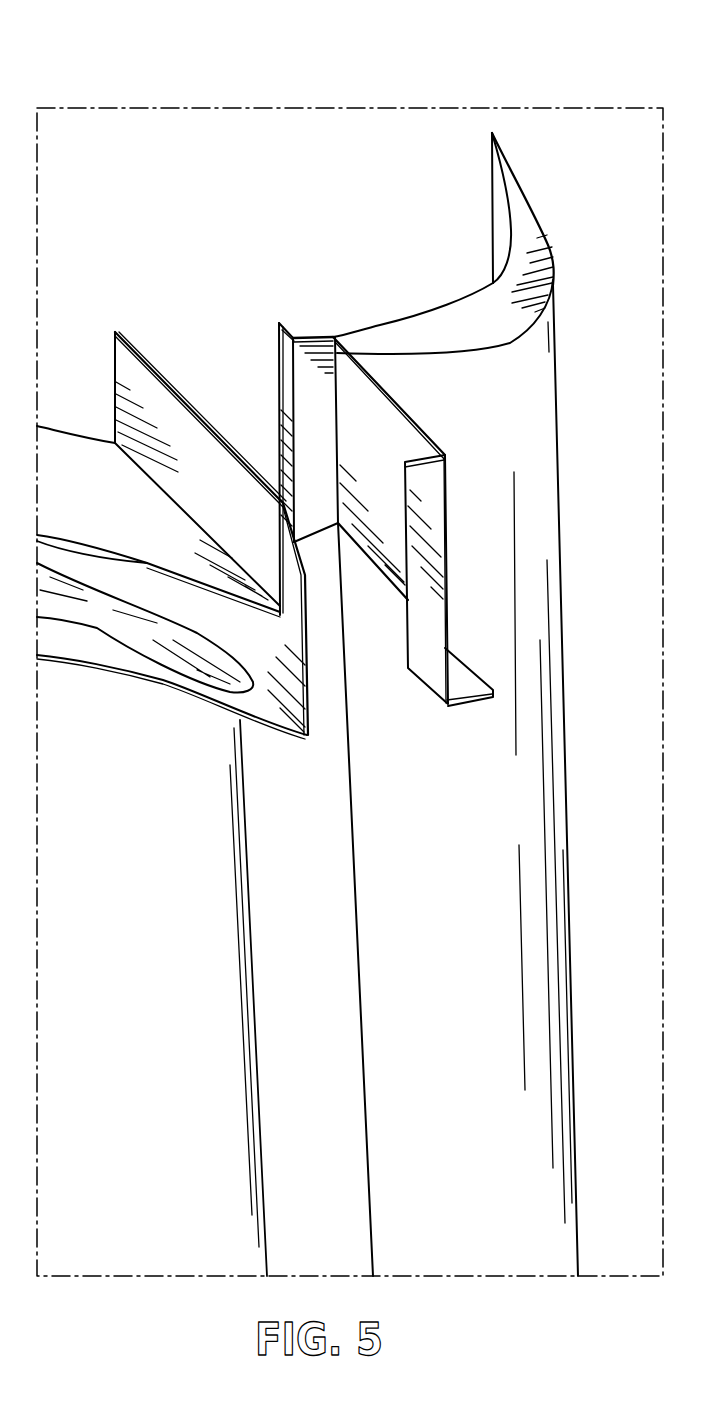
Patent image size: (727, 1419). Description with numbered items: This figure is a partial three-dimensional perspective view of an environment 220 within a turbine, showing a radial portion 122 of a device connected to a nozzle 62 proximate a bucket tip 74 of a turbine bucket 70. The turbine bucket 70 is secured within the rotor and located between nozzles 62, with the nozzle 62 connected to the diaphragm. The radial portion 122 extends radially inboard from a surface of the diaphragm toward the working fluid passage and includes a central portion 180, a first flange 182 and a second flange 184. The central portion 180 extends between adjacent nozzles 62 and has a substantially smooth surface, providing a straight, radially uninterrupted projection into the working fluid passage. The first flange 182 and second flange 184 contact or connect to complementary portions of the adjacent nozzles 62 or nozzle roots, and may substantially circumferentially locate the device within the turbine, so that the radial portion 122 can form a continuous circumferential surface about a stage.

The environment 220 is at (88, 98).
The turbine bucket 70 is at (117, 1053).
The bucket tip 74 is at (135, 517).
The first flange 182 is at (283, 372).
The radial portion 122 is at (395, 460).
The central portion 180 is at (407, 433).
The second flange 184 is at (430, 637).
The nozzle 62 is at (480, 960).